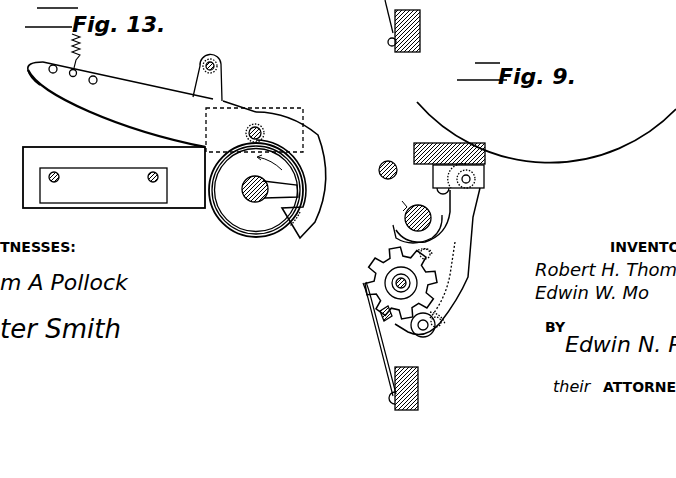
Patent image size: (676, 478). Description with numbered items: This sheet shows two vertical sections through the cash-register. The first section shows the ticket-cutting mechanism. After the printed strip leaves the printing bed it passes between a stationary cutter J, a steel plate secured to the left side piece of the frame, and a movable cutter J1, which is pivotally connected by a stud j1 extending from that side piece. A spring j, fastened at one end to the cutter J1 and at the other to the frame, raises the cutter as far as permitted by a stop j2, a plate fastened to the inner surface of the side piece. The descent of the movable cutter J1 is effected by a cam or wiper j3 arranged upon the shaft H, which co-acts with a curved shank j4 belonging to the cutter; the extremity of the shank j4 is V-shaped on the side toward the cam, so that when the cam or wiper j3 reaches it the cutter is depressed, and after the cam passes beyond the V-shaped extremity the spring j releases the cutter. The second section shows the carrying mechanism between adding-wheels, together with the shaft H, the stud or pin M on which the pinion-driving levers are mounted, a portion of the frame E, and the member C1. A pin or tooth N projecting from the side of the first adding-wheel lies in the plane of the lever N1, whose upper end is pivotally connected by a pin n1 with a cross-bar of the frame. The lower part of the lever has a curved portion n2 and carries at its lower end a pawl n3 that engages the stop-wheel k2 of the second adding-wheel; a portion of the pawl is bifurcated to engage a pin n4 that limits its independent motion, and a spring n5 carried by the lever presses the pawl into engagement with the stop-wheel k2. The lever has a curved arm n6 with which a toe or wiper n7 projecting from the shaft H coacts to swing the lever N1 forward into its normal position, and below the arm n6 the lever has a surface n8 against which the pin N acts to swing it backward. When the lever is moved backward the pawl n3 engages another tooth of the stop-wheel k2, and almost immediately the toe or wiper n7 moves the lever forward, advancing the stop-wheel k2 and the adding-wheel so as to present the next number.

In FIG. 13, the stationary cutter J is at (64, 150).
In FIG. 13, the movable cutter J1 is at (142, 104).
In FIG. 13, the spring j is at (82, 66).
In FIG. 13, the stud j1 is at (257, 126).
In FIG. 13, the stop j2 is at (196, 72).
In FIG. 13, the cam or wiper j3 is at (266, 236).
In FIG. 13, the curved shank j4 is at (301, 175).
In FIG. 13, the shaft H is at (258, 196).
In FIG. 9, the shaft H is at (405, 215).
In FIG. 9, the guide block E is at (414, 135).
In FIG. 9, the stud or pin M is at (390, 162).
In FIG. 9, the drum C1 is at (645, 142).
In FIG. 9, the pin or tooth N is at (378, 314).
In FIG. 9, the lever N1 is at (471, 221).
In FIG. 9, the pin n1 is at (487, 183).
In FIG. 9, the curved portion n2 is at (423, 332).
In FIG. 9, the pawl n3 is at (389, 323).
In FIG. 9, the pin n4 is at (442, 324).
In FIG. 9, the spring n5 is at (455, 283).
In FIG. 9, the curved arm n6 is at (393, 233).
In FIG. 9, the toe or wiper n7 is at (404, 201).
In FIG. 9, the surface n8 is at (430, 256).
In FIG. 9, the stop-wheel k2 is at (378, 266).